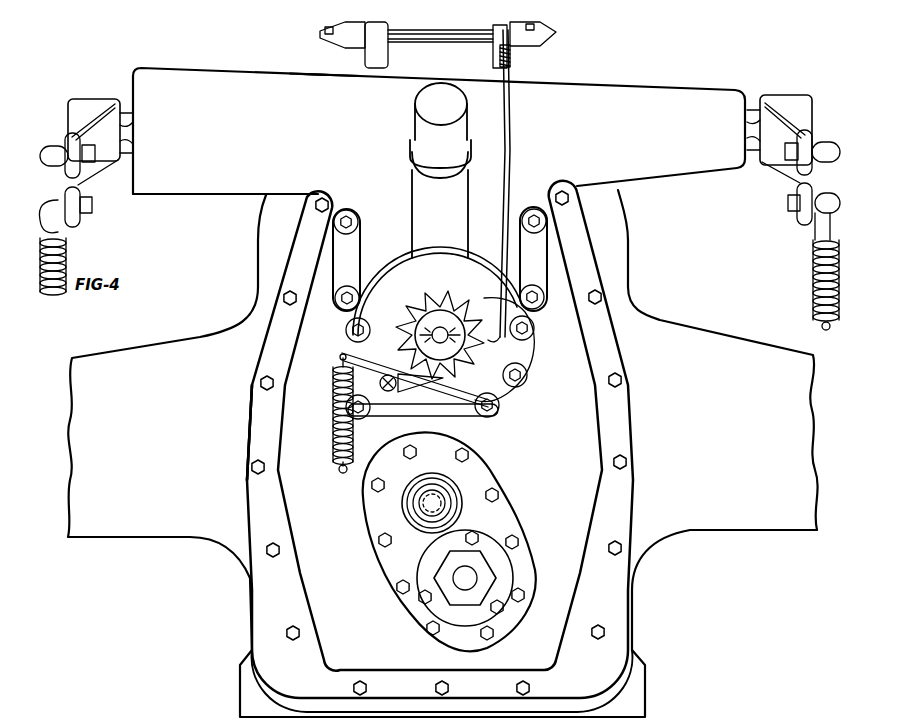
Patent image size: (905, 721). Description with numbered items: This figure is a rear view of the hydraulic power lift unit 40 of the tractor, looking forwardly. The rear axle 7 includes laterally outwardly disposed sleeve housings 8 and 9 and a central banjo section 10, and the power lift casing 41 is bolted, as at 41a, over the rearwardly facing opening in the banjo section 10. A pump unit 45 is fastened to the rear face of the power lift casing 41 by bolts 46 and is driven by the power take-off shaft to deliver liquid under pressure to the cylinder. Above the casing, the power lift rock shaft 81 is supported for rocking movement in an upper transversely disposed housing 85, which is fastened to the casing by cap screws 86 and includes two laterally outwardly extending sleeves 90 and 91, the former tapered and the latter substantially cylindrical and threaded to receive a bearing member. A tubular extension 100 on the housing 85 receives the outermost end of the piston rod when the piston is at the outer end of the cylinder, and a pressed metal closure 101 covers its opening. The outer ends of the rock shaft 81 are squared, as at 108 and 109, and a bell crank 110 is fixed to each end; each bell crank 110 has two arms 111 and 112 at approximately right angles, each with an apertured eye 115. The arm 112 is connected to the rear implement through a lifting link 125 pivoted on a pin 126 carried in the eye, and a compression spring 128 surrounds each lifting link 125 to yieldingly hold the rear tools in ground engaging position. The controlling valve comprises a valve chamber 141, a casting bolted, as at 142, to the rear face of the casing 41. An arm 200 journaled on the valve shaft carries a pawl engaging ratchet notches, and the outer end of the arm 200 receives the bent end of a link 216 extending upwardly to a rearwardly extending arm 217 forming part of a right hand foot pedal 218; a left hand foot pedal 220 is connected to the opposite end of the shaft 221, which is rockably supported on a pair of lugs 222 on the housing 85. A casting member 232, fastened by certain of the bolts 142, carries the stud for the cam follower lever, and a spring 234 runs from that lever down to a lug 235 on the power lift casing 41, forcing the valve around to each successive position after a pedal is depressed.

The rear axle 7 is at (634, 270).
The sleeve housing 8 is at (186, 348).
The sleeve housing 9 is at (720, 344).
The banjo section 10 is at (633, 621).
The hydraulic power lift unit 40 is at (646, 98).
The power lift casing 41 is at (358, 554).
The bolts 41a is at (250, 462).
The pump unit 45 is at (383, 571).
The bolts 46 is at (500, 490).
The power lift rock shaft 81 is at (389, 375).
The rock shaft housing 85 is at (318, 68).
The cap screws 86 is at (349, 286).
The housing sleeve 90 is at (695, 110).
The housing sleeve 91 is at (188, 74).
The tubular extension 100 is at (415, 178).
The pressed metal closure 101 is at (458, 108).
The squared end 108 is at (128, 118).
The squared end 109 is at (752, 118).
The bell crank 110 is at (98, 108).
The bell crank arm 111 is at (73, 128).
The bell crank arm 112 is at (84, 182).
The apertured eye 115 is at (72, 232).
The lifting link 125 is at (50, 204).
The pin 126 is at (92, 210).
The compression spring 128 is at (42, 293).
The valve chamber 141 is at (386, 304).
The bolts 142 is at (349, 334).
The arm 200 is at (487, 325).
The link 216 is at (512, 153).
The rearwardly extending arm 217 is at (512, 44).
The right hand foot pedal 218 is at (545, 32).
The left hand foot pedal 220 is at (358, 30).
The shaft 221 is at (455, 36).
The lugs 222 is at (493, 52).
The casting member 232 is at (435, 411).
The spring 234 is at (333, 415).
The lug 235 is at (340, 473).